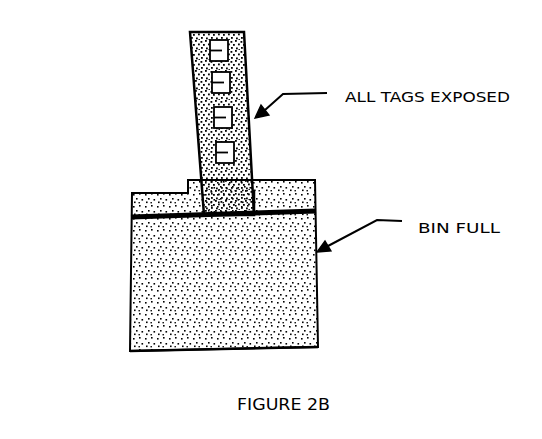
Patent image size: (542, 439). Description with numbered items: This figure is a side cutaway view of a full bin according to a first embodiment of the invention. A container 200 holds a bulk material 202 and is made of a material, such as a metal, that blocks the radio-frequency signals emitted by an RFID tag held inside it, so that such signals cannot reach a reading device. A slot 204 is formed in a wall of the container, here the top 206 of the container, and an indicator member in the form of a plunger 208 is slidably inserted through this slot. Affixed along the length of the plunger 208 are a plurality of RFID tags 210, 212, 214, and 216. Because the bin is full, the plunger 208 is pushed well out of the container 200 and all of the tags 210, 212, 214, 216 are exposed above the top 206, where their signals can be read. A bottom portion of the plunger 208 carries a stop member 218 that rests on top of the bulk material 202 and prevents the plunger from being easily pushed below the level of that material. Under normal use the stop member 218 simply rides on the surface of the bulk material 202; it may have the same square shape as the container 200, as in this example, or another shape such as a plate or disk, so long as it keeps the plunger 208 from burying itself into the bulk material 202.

The container 200 is at (318, 300).
The bulk material 202 is at (167, 317).
The slot 204 is at (259, 190).
The top 206 is at (160, 197).
The plunger 208 is at (256, 52).
The RFID tag 210 is at (210, 47).
The RFID tag 212 is at (212, 82).
The RFID tag 214 is at (214, 117).
The RFID tag 216 is at (216, 152).
The stop member 218 is at (318, 211).